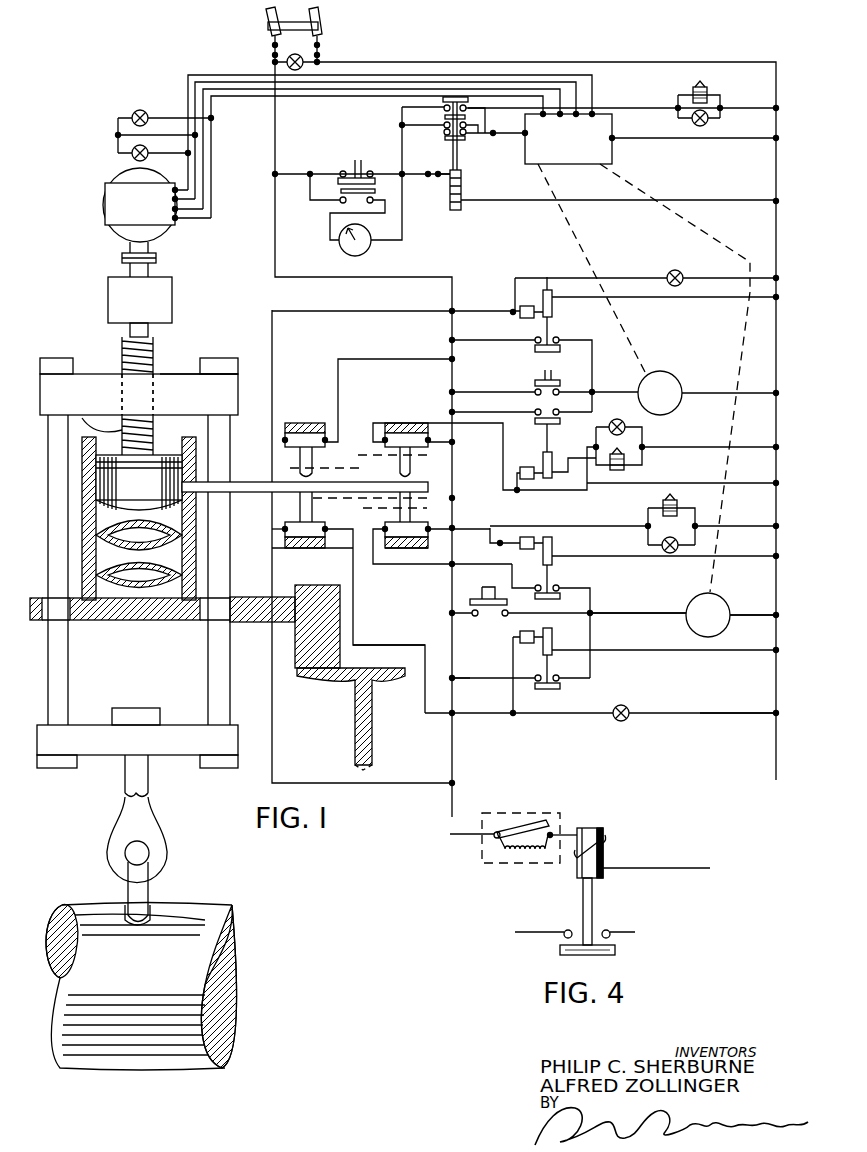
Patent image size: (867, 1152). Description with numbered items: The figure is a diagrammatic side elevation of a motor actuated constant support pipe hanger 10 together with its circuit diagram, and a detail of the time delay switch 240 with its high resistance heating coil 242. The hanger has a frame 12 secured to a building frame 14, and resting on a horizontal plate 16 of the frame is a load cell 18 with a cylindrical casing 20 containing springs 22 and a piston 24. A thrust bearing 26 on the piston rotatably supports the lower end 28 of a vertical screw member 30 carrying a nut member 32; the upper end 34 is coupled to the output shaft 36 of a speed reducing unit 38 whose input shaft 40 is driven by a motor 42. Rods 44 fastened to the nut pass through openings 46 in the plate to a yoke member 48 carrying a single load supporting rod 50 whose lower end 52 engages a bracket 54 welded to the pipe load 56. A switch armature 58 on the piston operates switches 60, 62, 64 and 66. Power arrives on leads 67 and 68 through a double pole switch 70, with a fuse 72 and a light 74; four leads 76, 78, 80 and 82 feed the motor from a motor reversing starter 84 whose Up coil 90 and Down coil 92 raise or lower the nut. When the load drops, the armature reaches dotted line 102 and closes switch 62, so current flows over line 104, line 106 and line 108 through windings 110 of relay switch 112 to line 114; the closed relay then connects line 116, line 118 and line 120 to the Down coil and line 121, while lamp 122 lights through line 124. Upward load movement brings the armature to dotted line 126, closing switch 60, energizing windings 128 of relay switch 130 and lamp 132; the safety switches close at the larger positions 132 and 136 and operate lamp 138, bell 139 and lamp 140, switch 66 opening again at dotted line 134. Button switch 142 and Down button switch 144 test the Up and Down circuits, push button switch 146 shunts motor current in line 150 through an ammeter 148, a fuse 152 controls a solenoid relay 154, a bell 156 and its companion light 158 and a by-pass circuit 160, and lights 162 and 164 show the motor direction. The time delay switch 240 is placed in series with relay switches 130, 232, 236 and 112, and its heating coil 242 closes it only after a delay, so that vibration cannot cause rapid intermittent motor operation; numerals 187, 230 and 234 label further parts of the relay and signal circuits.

In FIG. 1, the motor actuated constant support pipe hanger 10 is at (213, 333).
In FIG. 1, the frame 12 is at (295, 585).
In FIG. 1, the building frame 14 is at (335, 676).
In FIG. 1, the horizontal plate 16 is at (165, 620).
In FIG. 1, the load cell 18 is at (106, 408).
In FIG. 1, the cylindrical casing 20 is at (82, 498).
In FIG. 1, the springs 22 is at (100, 620).
In FIG. 1, the piston 24 is at (182, 490).
In FIG. 1, the thrust bearing 26 is at (238, 404).
In FIG. 1, the lower end of screw member 28 is at (155, 438).
In FIG. 1, the screw member 30 is at (115, 430).
In FIG. 1, the nut member 32 is at (238, 401).
In FIG. 1, the upper end of screw member 34 is at (155, 348).
In FIG. 1, the output shaft 36 is at (148, 330).
In FIG. 1, the speed reducing unit 38 is at (108, 297).
In FIG. 1, the input shaft 40 is at (130, 266).
In FIG. 1, the motor 42 is at (105, 212).
In FIG. 1, the rods 44 is at (229, 650).
In FIG. 1, the openings 46 is at (195, 621).
In FIG. 1, the yoke member 48 is at (185, 755).
In FIG. 1, the load supporting rod 50 is at (125, 775).
In FIG. 1, the lower end of load supporting rod 52 is at (167, 855).
In FIG. 1, the bracket 54 is at (128, 875).
In FIG. 1, the pipe load 56 is at (205, 905).
In FIG. 1, the switch armature 58 is at (226, 494).
In FIG. 1, the switch 60 is at (362, 394).
In FIG. 1, the switch 62 is at (300, 520).
In FIG. 1, the switch 64 is at (412, 450).
In FIG. 1, the switch 66 is at (442, 528).
In FIG. 1, the supply lead 67 is at (266, 10).
In FIG. 1, the supply lead 68 is at (322, 12).
In FIG. 1, the double pole switch 70 is at (320, 30).
In FIG. 1, the fuse 72 is at (279, 56).
In FIG. 1, the light 74 is at (320, 60).
In FIG. 1, the motor lead 76 is at (187, 80).
In FIG. 1, the motor lead 78 is at (195, 96).
In FIG. 1, the motor lead 80 is at (203, 136).
In FIG. 1, the motor lead 82 is at (211, 162).
In FIG. 1, the motor reversing starter 84 is at (525, 160).
In FIG. 1, the Up coil 90 is at (672, 375).
In FIG. 1, the Down coil 92 is at (725, 600).
In FIG. 1, the dotted line 102 is at (353, 580).
In FIG. 1, the line 104 is at (390, 783).
In FIG. 1, the line 106 is at (373, 645).
In FIG. 1, the line 108 is at (513, 655).
In FIG. 1, the windings 110 is at (552, 653).
In FIG. 1, the relay switch 112 is at (547, 690).
In FIG. 1, the line 114 is at (668, 655).
In FIG. 1, the line 116 is at (452, 686).
In FIG. 1, the line 118 is at (590, 630).
In FIG. 4, the line 118 is at (642, 940).
In FIG. 1, the line 120 is at (645, 613).
In FIG. 1, the line 121 is at (731, 620).
In FIG. 1, the lamp 122 is at (621, 722).
In FIG. 1, the line 124 is at (705, 714).
In FIG. 1, the dotted line 126 is at (318, 465).
In FIG. 1, the windings 128 is at (547, 288).
In FIG. 1, the relay switch 130 is at (549, 336).
In FIG. 1, the lamp 132 is at (675, 268).
In FIG. 1, the dotted line 134 is at (517, 492).
In FIG. 1, the dotted position 136 is at (405, 550).
In FIG. 1, the lamp 138 is at (660, 545).
In FIG. 1, the bell 139 is at (640, 460).
In FIG. 1, the lamp 140 is at (630, 430).
In FIG. 1, the button switch 142 is at (535, 383).
In FIG. 1, the Down button switch 144 is at (470, 600).
In FIG. 1, the push button switch 146 is at (357, 160).
In FIG. 1, the ammeter 148 is at (365, 252).
In FIG. 1, the line 150 is at (308, 172).
In FIG. 1, the fuse 152 is at (415, 176).
In FIG. 1, the solenoid relay 154 is at (462, 205).
In FIG. 1, the bell 156 is at (710, 92).
In FIG. 1, the indicator lamp 158 is at (712, 122).
In FIG. 1, the by-pass circuit 160 is at (480, 128).
In FIG. 1, the light 162 is at (132, 114).
In FIG. 1, the light 164 is at (132, 150).
In FIG. 1, the relay coil 187 is at (678, 505).
In FIG. 1, the relay coil 230 is at (543, 465).
In FIG. 1, the relay switch 232 is at (550, 430).
In FIG. 1, the relay coil 234 is at (552, 545).
In FIG. 4, the relay coil 234 is at (603, 838).
In FIG. 1, the relay switch 236 is at (553, 575).
In FIG. 4, the relay switch 236 is at (592, 905).
In FIG. 1, the time delay switch 240 is at (522, 306).
In FIG. 4, the time delay switch 240 is at (520, 825).
In FIG. 4, the heating coil 242 is at (520, 855).